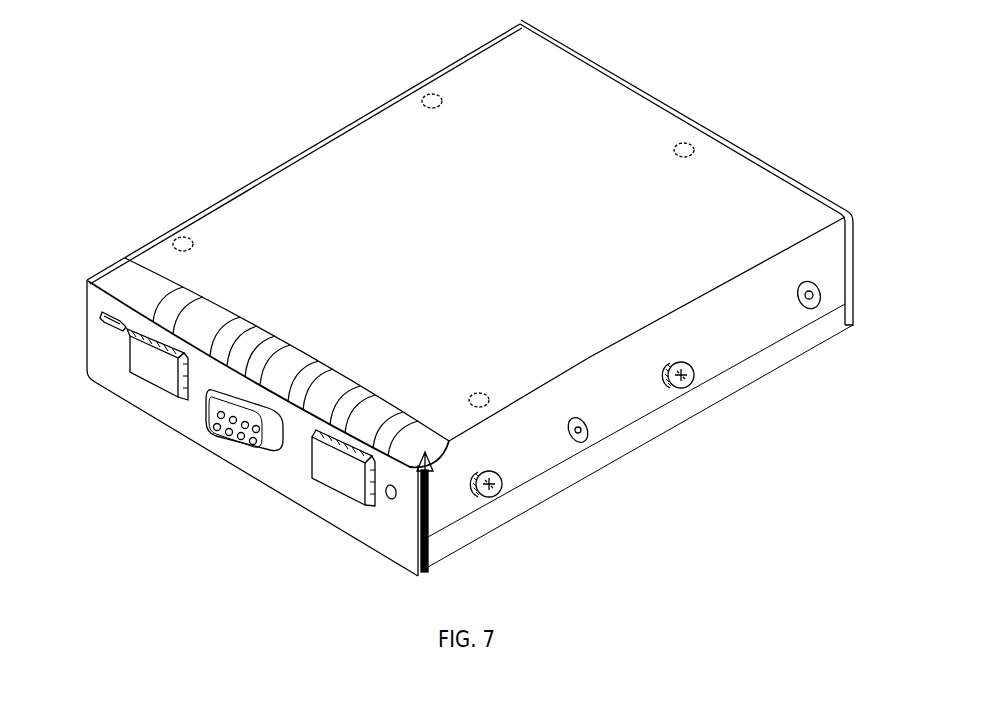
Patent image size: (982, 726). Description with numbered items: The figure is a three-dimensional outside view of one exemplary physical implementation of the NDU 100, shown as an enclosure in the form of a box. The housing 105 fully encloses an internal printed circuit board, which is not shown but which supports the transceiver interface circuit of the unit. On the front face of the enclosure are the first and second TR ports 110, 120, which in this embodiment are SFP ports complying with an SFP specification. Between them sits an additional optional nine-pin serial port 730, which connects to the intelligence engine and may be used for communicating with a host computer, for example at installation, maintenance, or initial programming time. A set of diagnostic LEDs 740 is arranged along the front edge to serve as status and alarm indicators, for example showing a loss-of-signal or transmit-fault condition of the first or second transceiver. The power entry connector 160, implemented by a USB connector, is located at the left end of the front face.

The NDU 100 is at (308, 102).
The housing 105 is at (458, 72).
The set of diagnostic LEDs 740 is at (228, 330).
The power entry connector 160 is at (104, 314).
The first TR port 110 is at (157, 386).
The second TR port 120 is at (343, 492).
The 9-pin serial port 730 is at (248, 446).